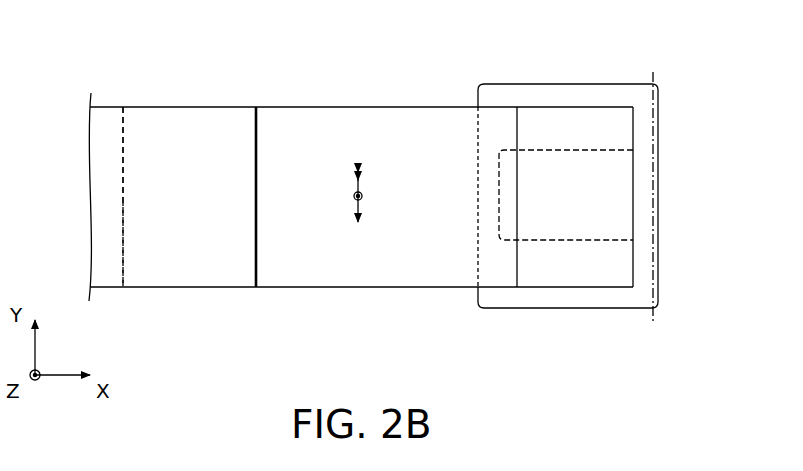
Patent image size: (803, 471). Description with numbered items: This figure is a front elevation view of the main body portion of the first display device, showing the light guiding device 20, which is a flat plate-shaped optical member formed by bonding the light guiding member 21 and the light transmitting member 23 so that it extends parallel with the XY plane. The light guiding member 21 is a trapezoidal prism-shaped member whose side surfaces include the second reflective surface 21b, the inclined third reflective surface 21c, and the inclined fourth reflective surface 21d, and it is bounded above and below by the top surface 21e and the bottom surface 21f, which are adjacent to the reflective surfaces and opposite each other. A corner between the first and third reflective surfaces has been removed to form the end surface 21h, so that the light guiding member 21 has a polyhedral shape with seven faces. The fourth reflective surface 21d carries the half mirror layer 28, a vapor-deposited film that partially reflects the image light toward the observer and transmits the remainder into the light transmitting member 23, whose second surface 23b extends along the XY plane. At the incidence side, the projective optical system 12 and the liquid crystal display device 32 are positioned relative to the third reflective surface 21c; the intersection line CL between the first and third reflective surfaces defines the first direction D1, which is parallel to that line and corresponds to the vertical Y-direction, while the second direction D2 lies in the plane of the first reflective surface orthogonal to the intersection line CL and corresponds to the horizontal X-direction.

The light transmitting member 23 is at (112, 100).
The second surface 23b is at (190, 128).
The half mirror layer 28 is at (195, 265).
The fourth reflective surface 21d is at (179, 251).
The bottom surface 21f is at (276, 289).
The top surface 21e is at (320, 107).
The second reflective surface 21b is at (387, 269).
The light guiding device 20 is at (418, 85).
The light guiding member 21 is at (433, 301).
The third reflective surface 21c is at (572, 270).
The end surface 21h is at (633, 260).
The projective optical system 12 is at (600, 84).
The liquid crystal display device 32 is at (600, 148).
The intersection line CL is at (657, 162).
The second direction D2 is at (361, 193).
The first direction D1 is at (356, 200).